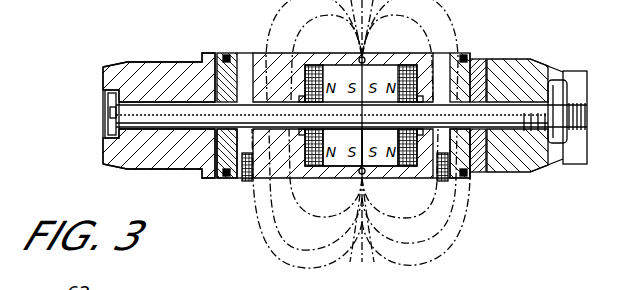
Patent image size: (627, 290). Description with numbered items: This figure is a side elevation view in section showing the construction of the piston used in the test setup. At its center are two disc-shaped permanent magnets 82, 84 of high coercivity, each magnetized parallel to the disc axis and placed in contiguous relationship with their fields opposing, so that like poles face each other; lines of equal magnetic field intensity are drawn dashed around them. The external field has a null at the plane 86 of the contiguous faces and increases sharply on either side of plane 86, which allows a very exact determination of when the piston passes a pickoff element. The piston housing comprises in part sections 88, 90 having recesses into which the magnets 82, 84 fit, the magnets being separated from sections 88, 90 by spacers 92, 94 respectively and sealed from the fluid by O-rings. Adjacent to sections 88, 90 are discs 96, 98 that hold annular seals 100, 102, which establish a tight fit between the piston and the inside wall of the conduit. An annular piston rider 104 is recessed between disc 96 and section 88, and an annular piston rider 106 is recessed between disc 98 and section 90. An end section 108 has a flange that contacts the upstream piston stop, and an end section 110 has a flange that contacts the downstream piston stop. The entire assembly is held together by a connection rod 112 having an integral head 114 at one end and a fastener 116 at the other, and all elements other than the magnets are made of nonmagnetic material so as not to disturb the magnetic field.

The end section 108 is at (178, 67).
The disc 96 is at (177, 170).
The integral head 114 is at (104, 92).
The connection rod 112 is at (106, 115).
The annular seal 100 is at (225, 150).
The annular piston rider 104 is at (238, 183).
The spacer 92 is at (266, 192).
The section 88 is at (283, 215).
The permanent magnet 82 is at (338, 157).
The permanent magnet 84 is at (376, 160).
The plane 86 is at (362, 250).
The spacer 94 is at (409, 180).
The section 90 is at (433, 180).
The annular piston rider 106 is at (447, 183).
The annular seal 102 is at (463, 180).
The disc 98 is at (497, 57).
The end section 110 is at (527, 62).
The fastener 116 is at (560, 93).